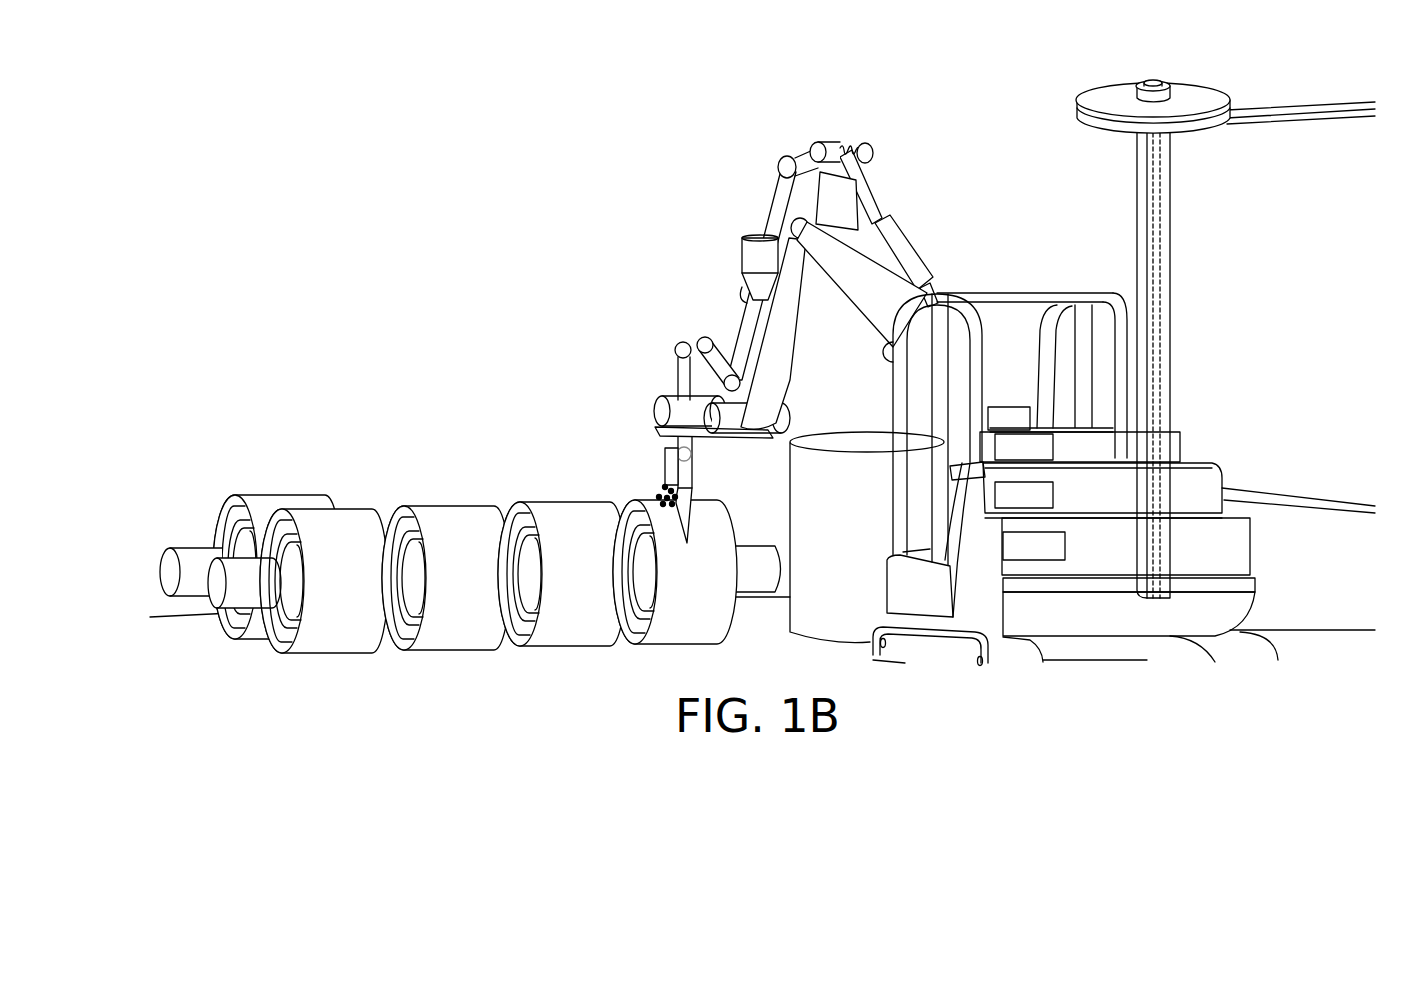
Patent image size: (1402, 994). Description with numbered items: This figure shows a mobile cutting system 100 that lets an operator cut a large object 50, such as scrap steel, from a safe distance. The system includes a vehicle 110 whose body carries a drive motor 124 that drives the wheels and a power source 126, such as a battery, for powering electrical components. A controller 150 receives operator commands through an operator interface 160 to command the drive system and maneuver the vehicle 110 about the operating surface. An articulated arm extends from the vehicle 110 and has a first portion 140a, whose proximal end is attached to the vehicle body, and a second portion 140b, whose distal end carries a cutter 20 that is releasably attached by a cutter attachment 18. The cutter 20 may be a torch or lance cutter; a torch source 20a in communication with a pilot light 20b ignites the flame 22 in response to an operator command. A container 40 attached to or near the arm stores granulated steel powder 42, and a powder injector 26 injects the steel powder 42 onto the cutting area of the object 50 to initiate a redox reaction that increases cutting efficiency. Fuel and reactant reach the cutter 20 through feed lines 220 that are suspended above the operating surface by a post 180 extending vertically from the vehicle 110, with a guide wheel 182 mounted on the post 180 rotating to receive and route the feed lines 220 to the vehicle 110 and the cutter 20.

The mobile cutting system 100 is at (966, 97).
The vehicle 110 is at (1012, 265).
The cutter attachment 18 is at (664, 414).
The cutter 20 is at (693, 477).
The torch source 20a is at (691, 499).
The pilot light 20b is at (695, 456).
The flame 22 is at (693, 510).
The powder injector 26 is at (665, 459).
The container 40 is at (742, 262).
The steel powder 42 is at (656, 490).
The object 50 is at (783, 620).
The drive motor 124 is at (1034, 546).
The power source 126 is at (1024, 495).
The first portion 140a is at (890, 343).
The second portion 140b is at (797, 352).
The controller 150 is at (1024, 447).
The operator interface 160 is at (1010, 407).
The post 180 is at (1137, 208).
The guide wheel 182 is at (1080, 125).
The feed lines 220 is at (1160, 258).